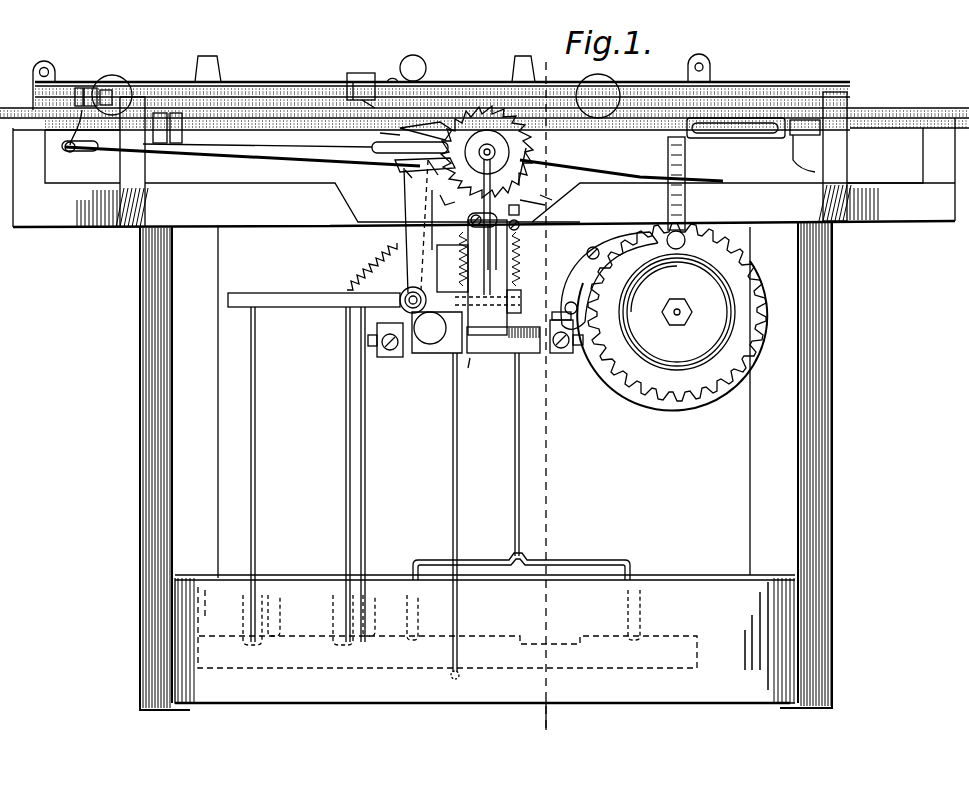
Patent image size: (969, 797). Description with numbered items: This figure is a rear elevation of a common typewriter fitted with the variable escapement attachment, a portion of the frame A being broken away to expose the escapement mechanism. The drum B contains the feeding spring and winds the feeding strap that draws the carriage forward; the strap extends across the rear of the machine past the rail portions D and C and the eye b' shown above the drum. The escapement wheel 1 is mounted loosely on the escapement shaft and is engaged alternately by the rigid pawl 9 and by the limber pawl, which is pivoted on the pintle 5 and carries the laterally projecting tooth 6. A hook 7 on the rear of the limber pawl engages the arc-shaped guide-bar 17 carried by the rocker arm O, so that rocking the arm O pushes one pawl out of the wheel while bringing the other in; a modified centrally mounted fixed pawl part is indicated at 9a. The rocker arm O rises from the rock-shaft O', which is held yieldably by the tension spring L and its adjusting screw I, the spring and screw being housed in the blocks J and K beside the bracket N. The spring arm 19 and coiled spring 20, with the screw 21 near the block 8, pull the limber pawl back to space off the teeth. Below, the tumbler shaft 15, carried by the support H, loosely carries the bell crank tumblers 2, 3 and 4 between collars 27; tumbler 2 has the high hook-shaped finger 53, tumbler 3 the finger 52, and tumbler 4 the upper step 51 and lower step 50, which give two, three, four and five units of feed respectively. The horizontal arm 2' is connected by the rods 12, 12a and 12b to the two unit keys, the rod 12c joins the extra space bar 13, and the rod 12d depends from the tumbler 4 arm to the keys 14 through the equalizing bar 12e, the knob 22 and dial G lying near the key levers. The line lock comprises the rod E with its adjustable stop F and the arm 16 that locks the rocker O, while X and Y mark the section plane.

The escapement wheel 1 is at (532, 150).
The bell crank tumbler 2 is at (406, 226).
The horizontal arm of tumbler 2 2' is at (314, 310).
The bell crank tumbler 3 is at (395, 162).
The bell crank tumbler 4 is at (410, 174).
The pintle 5 is at (400, 316).
The laterally projecting tooth 6 is at (532, 203).
The hook 7 is at (540, 185).
The slide frame 8 is at (486, 255).
The rigid pawl 9 is at (513, 211).
The pawl hub member 9a is at (556, 195).
The rod 12 is at (251, 423).
The rod 12a is at (346, 424).
The rod 12b is at (366, 424).
The rod 12c is at (453, 423).
The rod 12d is at (520, 422).
The equalizing bar 12e is at (585, 560).
The extra space bar 13 is at (589, 660).
The keys 14 is at (243, 612).
The tumbler shaft 15 is at (444, 199).
The arm 16 is at (372, 148).
The arc-shaped guide-bar 17 is at (532, 168).
The spring arm 19 is at (462, 372).
The coiled spring 20 is at (467, 222).
The screw 21 is at (489, 250).
The knob 22 is at (449, 676).
The collars 27 is at (350, 326).
The lower step 50 is at (405, 172).
The upper step 51 is at (432, 168).
The hook-shaped finger 52 is at (380, 133).
The hook-shaped finger 53 is at (428, 134).
The frame A is at (832, 428).
The drum B is at (652, 335).
The carriage rail C is at (880, 108).
The rail D is at (776, 82).
The rod E is at (797, 131).
The stop F is at (735, 128).
The dial G is at (157, 112).
The support H is at (355, 242).
The adjusting screw I is at (412, 360).
The bracket J is at (357, 72).
The rod K is at (683, 197).
The tension spring L is at (445, 356).
The pawl arm N is at (588, 247).
The rocker arm O is at (486, 369).
The rock-shaft O' is at (555, 346).
The section line X is at (544, 389).
The section line Y is at (542, 721).
The lever b' is at (392, 161).